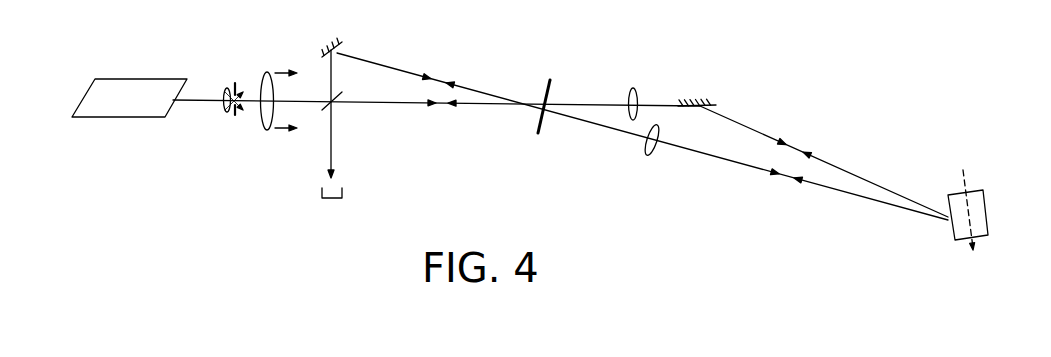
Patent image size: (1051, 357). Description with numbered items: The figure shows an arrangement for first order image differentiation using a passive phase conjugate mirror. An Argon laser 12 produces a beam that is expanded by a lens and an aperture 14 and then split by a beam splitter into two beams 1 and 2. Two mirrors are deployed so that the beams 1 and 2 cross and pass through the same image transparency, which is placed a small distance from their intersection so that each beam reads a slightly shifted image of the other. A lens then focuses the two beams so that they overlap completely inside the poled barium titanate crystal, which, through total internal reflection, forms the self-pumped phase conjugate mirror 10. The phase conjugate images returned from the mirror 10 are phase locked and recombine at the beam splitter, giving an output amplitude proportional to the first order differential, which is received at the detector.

The beam 1 is at (415, 104).
The beam 2 is at (407, 71).
The passive phase conjugate mirror 10 is at (987, 218).
The laser 12 is at (137, 79).
The aperture 14 is at (233, 87).